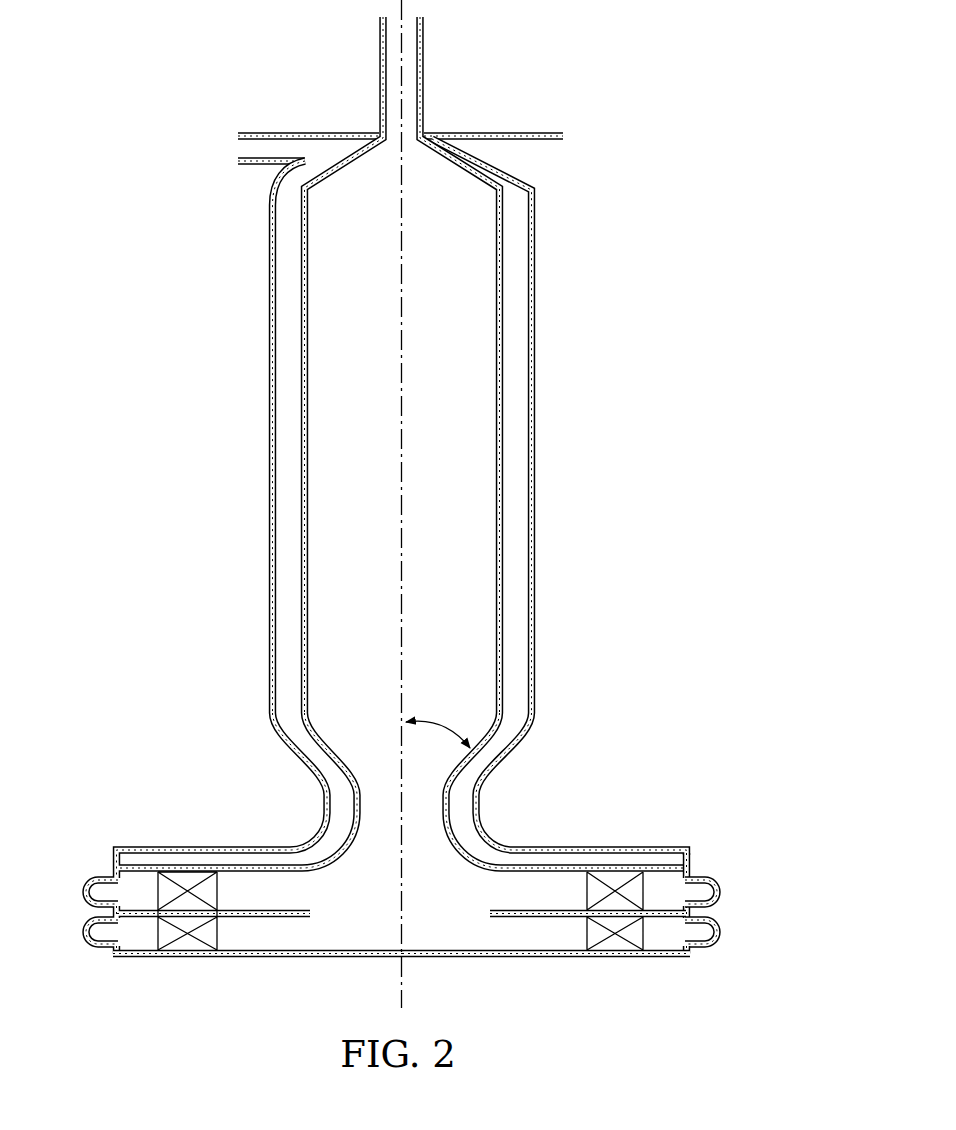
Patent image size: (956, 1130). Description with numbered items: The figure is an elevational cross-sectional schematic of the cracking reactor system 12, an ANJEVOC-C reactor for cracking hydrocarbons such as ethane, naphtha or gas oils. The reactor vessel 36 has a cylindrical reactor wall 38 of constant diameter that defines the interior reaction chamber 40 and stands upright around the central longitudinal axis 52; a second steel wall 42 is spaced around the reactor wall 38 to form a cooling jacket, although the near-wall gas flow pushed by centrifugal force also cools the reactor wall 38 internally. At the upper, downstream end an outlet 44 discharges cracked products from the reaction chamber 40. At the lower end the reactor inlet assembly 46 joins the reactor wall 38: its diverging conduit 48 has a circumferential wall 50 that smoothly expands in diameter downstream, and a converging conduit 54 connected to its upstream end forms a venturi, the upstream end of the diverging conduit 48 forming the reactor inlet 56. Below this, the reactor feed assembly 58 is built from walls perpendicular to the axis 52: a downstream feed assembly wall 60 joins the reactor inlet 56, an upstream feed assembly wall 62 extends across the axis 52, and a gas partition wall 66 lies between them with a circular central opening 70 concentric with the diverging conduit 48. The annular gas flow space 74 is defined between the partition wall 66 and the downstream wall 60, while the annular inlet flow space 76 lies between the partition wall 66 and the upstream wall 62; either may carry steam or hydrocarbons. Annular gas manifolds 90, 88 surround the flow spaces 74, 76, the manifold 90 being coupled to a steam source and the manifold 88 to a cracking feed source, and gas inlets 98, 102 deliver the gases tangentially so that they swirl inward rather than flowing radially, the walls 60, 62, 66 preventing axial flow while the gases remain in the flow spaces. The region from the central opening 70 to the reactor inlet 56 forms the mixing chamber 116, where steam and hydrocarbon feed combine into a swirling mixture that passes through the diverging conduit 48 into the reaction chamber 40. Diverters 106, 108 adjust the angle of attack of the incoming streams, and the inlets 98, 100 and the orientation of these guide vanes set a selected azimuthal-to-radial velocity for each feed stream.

The cracking reactor system 12 is at (441, 507).
The reactor vessel 36 is at (515, 426).
The reactor wall 38 is at (494, 272).
The interior reaction chamber 40 is at (341, 503).
The second steel wall 42 is at (535, 270).
The outlet 44 is at (424, 96).
The reactor inlet assembly 46 is at (490, 802).
The diverging conduit 48 is at (447, 771).
The circumferential wall 50 is at (310, 733).
The central longitudinal axis 52 is at (398, 272).
The converging conduit 54 is at (351, 841).
The reactor inlet 56 is at (328, 849).
The reactor feed assembly 58 is at (296, 960).
The downstream feed assembly wall 60 is at (127, 860).
The upstream feed assembly wall 62 is at (401, 979).
The gas partition wall 66 is at (489, 912).
The central opening 70 is at (371, 936).
The annular gas flow space 74 is at (573, 881).
The annular inlet flow space 76 is at (531, 943).
The annular gas manifold 88 is at (727, 934).
The annular gas manifold 90 is at (741, 871).
The gas inlet 98 is at (693, 884).
The inlet 100 is at (728, 891).
The gas inlet 102 is at (692, 955).
The diverter 106 is at (149, 870).
The diverter 108 is at (189, 919).
The mixing chamber 116 is at (464, 865).